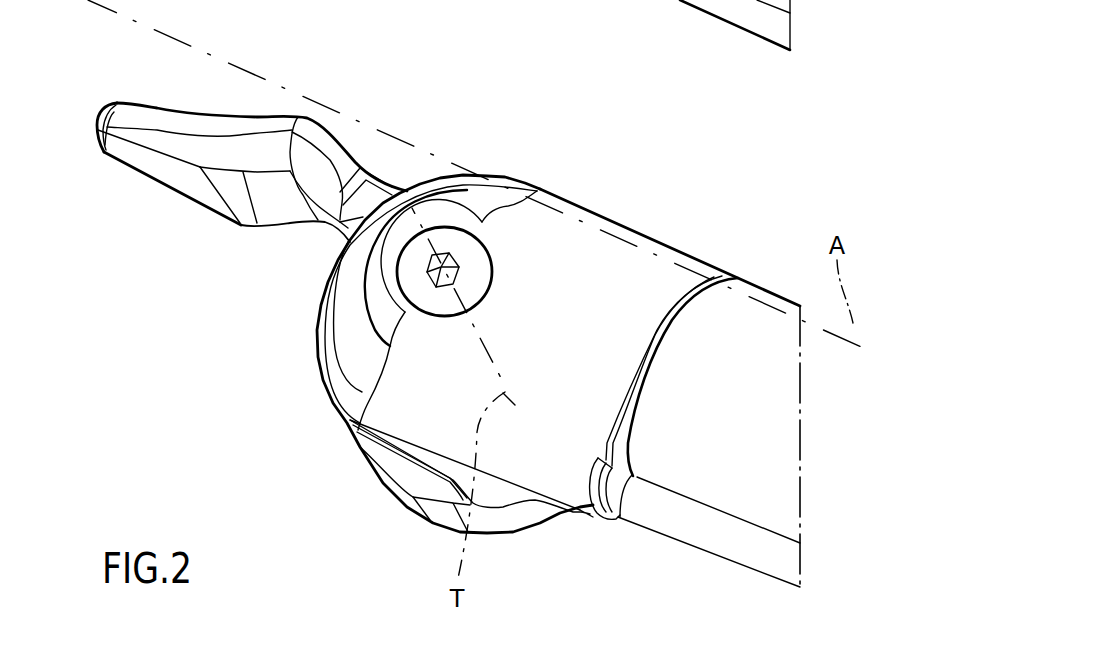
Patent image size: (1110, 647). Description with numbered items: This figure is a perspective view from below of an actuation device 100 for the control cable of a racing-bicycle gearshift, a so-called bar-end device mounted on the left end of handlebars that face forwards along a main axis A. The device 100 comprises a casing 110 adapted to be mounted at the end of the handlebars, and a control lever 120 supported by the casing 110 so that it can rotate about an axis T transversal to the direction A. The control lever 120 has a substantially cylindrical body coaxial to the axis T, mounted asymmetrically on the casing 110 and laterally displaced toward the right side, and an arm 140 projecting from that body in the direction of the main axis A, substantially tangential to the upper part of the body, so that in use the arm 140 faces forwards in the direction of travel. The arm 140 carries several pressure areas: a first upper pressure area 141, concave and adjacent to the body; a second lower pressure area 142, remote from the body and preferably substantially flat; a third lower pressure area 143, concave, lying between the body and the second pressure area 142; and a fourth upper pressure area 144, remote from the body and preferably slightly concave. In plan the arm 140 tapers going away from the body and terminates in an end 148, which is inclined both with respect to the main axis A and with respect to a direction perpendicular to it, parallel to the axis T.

The actuation device 100 is at (147, 433).
The casing 110 is at (633, 280).
The control lever 120 is at (209, 92).
The arm 140 is at (291, 127).
The first upper pressure area 141 is at (380, 172).
The second lower pressure area 142 is at (167, 170).
The third lower pressure area 143 is at (282, 210).
The fourth upper pressure area 144 is at (150, 106).
The end 148 is at (88, 122).